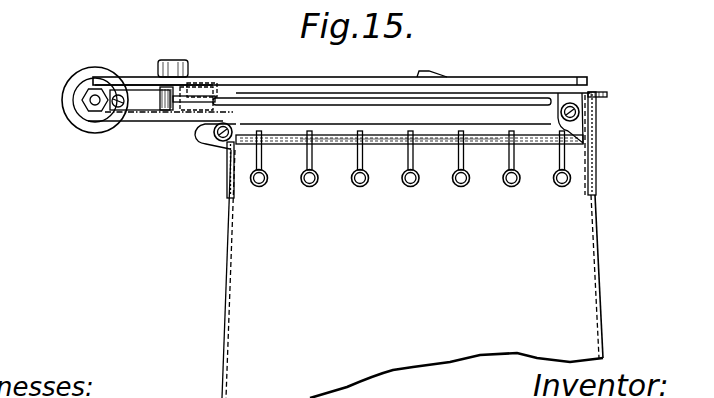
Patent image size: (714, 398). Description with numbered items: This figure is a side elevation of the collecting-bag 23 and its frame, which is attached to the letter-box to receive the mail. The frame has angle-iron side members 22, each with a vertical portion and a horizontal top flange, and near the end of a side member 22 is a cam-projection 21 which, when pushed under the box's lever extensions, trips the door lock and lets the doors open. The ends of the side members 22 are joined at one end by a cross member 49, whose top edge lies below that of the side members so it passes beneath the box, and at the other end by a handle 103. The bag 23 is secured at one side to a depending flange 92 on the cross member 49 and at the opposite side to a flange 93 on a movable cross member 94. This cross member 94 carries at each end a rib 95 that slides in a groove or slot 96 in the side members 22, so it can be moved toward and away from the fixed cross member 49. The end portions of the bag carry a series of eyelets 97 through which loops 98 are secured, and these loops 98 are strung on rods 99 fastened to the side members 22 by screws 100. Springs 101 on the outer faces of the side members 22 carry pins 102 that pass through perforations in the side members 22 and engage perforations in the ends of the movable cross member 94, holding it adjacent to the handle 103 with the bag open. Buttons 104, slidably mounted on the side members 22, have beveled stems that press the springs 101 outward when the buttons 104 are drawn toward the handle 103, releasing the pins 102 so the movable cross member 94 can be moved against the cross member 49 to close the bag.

The cam-projection 21 is at (432, 75).
The side member 22 is at (503, 93).
The collecting-bag 23 is at (240, 268).
The cross member 49 is at (597, 111).
The depending flange 92 is at (595, 173).
The flange 93 is at (230, 177).
The movable cross member 94 is at (212, 87).
The rib 95 is at (193, 103).
The groove or slot 96 is at (363, 103).
The eyelets 97 is at (400, 187).
The loops 98 is at (510, 158).
The rods 99 is at (445, 144).
The screws 100 is at (231, 130).
The springs 101 is at (137, 102).
The pins 102 is at (157, 113).
The handle 103 is at (72, 108).
The buttons 104 is at (173, 65).